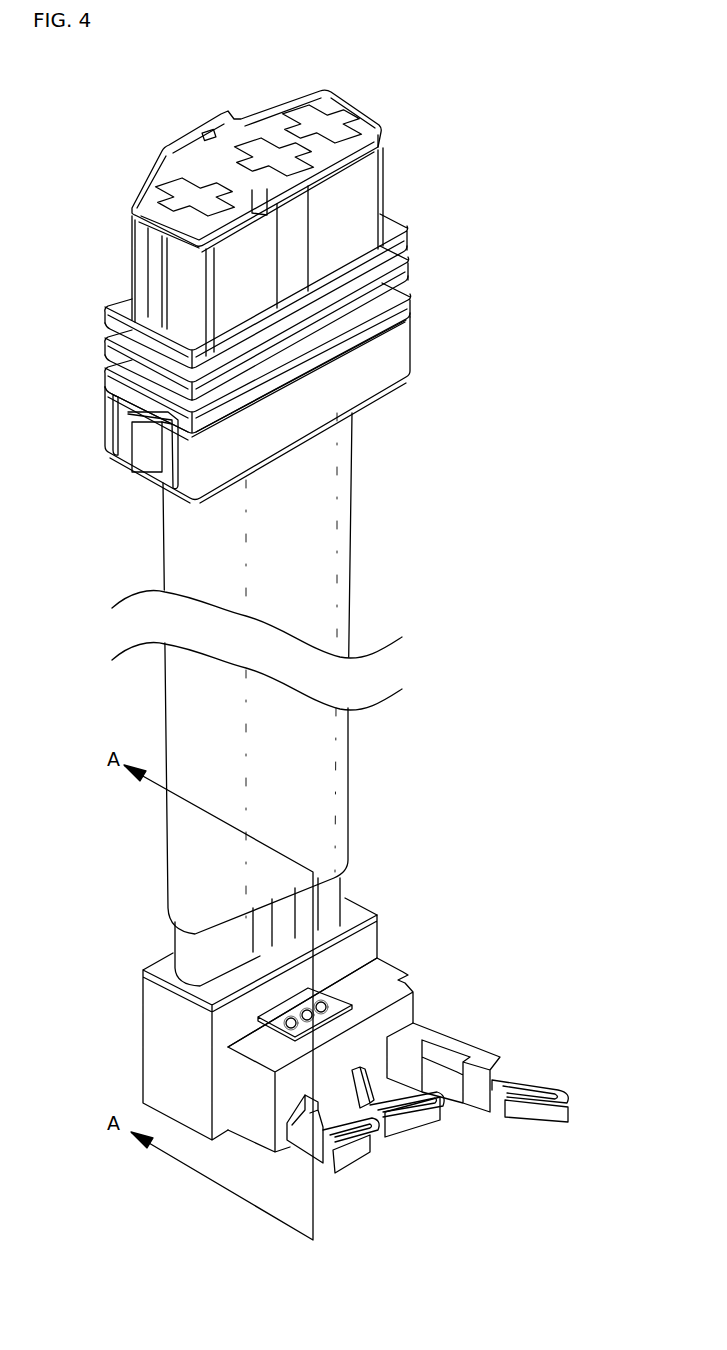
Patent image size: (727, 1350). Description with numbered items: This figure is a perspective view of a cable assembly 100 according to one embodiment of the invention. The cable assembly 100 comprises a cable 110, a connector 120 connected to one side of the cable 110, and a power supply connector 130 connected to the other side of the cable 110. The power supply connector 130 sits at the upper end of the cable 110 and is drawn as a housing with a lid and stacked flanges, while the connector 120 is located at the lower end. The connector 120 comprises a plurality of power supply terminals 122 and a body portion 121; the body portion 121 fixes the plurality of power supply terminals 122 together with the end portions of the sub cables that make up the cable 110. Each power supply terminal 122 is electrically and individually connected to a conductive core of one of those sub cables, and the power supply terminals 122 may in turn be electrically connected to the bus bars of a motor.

The cable assembly 100 is at (570, 338).
The cable 110 is at (348, 758).
The connector 120 is at (514, 858).
The body portion 121 is at (388, 934).
The power supply terminals 122 is at (545, 1083).
The power supply connector 130 is at (408, 347).